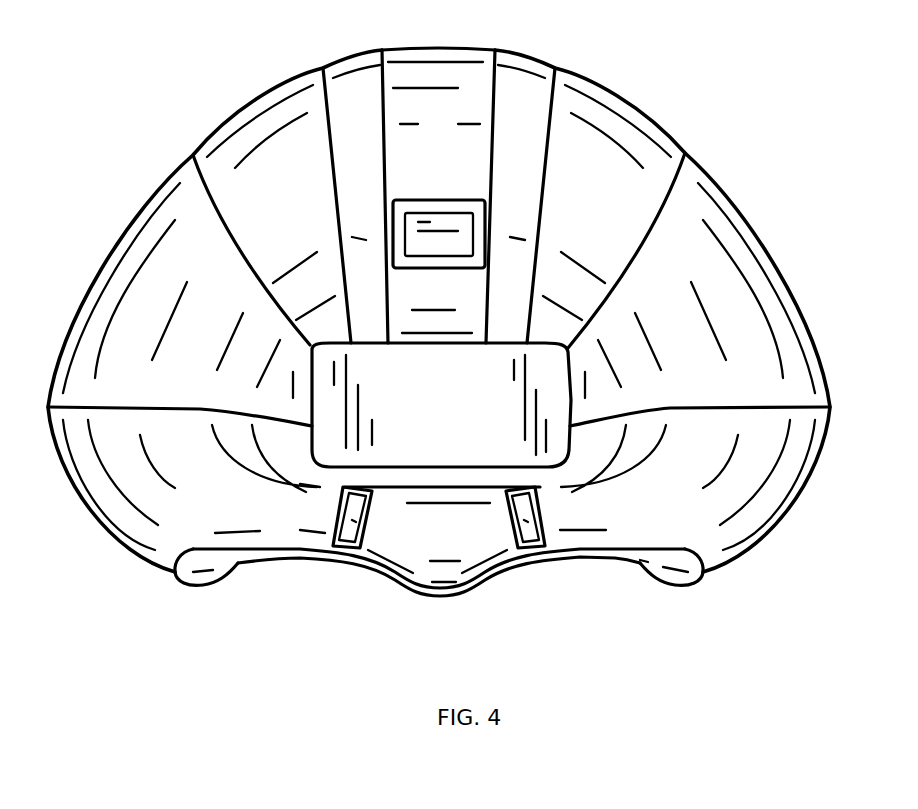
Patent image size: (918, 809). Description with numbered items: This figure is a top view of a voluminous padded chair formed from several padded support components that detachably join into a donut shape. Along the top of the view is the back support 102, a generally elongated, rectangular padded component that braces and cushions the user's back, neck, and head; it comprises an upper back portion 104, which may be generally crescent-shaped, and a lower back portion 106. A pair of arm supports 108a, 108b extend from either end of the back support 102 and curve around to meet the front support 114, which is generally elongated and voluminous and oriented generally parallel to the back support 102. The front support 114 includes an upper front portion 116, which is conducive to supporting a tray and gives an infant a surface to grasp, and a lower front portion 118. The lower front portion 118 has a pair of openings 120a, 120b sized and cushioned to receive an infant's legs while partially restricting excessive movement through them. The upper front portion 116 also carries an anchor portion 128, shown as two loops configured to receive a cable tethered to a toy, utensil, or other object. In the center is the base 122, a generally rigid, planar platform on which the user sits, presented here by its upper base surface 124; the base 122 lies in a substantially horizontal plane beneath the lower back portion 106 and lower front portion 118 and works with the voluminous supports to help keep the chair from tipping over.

The back support 102 is at (456, 163).
The upper back portion 104 is at (437, 50).
The lower back portion 106 is at (410, 343).
The arm support 108a is at (222, 342).
The arm support 108b is at (698, 342).
The front support 114 is at (458, 539).
The upper front portion 116 is at (683, 550).
The lower front portion 118 is at (667, 584).
The opening 120a is at (284, 580).
The opening 120b is at (591, 576).
The base 122 is at (547, 380).
The upper base surface 124 is at (462, 422).
The anchor portion 128 is at (365, 572).